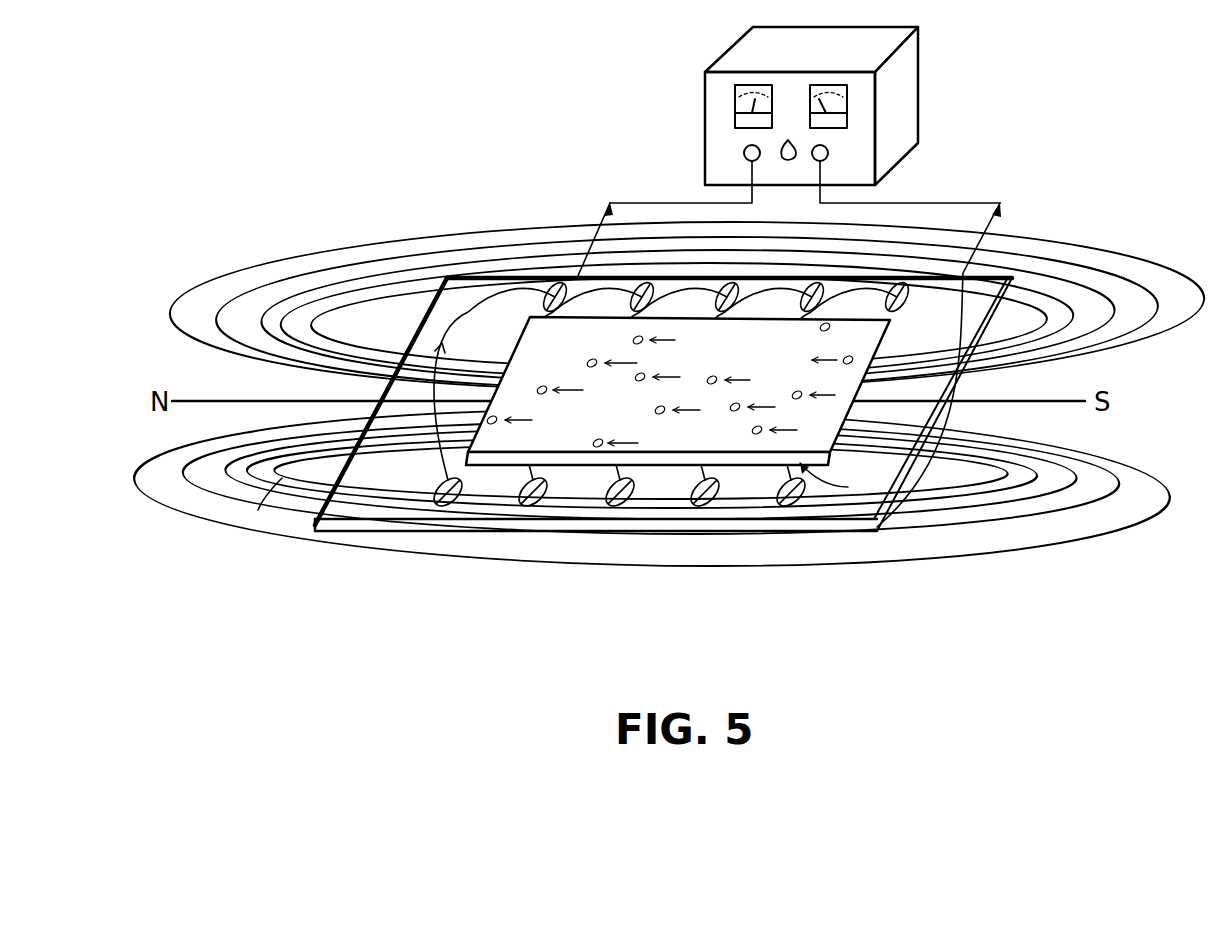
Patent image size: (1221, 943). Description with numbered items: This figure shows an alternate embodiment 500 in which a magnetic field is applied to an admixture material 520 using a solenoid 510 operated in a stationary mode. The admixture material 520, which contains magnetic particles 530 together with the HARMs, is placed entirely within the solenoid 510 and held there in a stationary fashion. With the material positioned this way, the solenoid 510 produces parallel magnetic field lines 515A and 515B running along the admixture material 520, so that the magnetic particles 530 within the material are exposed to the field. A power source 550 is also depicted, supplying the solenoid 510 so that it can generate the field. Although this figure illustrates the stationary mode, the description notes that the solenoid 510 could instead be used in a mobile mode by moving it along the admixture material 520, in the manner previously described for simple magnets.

The alternate embodiment 500 is at (643, 370).
The solenoid 510 is at (463, 307).
The magnetic field lines 515A is at (297, 258).
The magnetic field lines 515B is at (998, 563).
The admixture material 520 is at (658, 462).
The magnetic particles 530 is at (282, 478).
The power source 550 is at (947, 112).